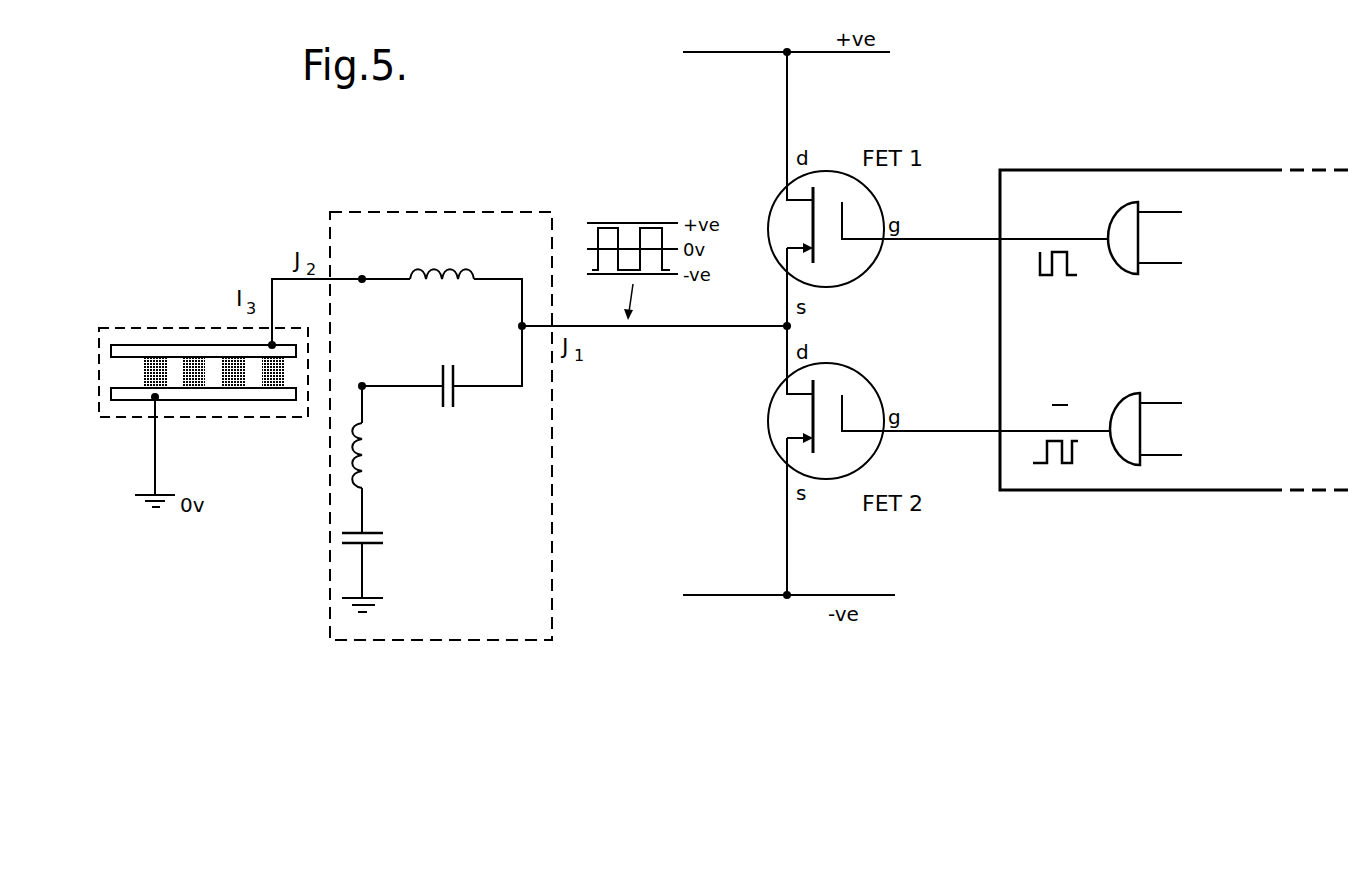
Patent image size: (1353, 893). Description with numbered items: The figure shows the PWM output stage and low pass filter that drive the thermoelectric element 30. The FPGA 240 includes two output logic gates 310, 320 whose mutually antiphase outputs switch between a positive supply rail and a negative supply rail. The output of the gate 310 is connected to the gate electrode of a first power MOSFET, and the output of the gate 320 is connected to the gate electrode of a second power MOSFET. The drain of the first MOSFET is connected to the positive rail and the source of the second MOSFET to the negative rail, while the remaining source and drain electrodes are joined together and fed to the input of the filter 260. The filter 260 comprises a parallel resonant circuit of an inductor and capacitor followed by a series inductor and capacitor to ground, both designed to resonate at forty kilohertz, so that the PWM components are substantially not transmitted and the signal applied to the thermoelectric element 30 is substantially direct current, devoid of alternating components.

The thermoelectric element 30 is at (194, 337).
The filter 260 is at (490, 222).
The FPGA 240 is at (1272, 222).
The output logic gate 310 is at (1122, 273).
The output logic gate 320 is at (1120, 400).